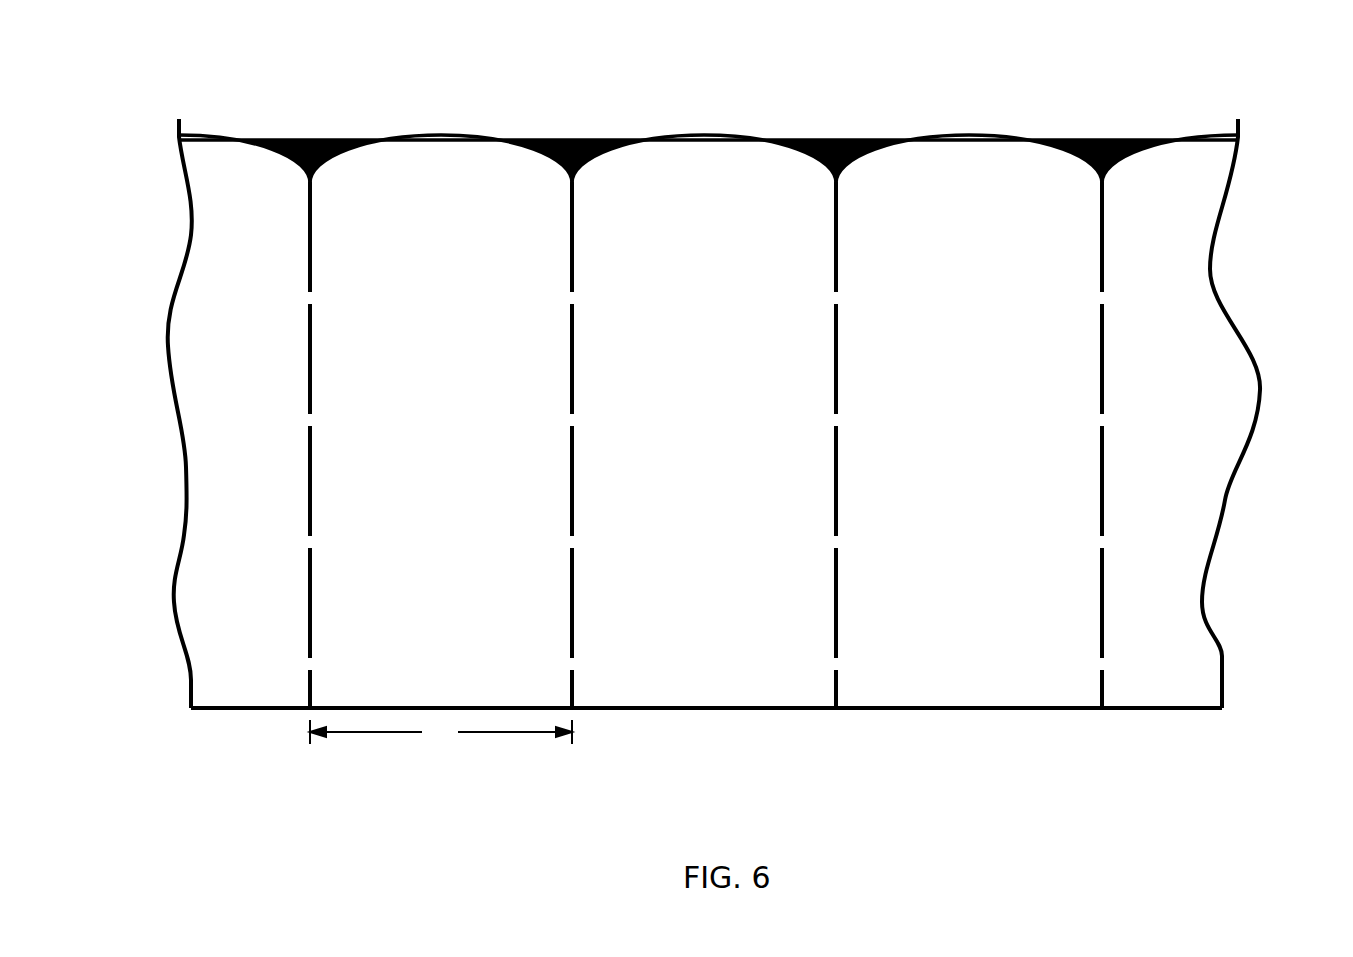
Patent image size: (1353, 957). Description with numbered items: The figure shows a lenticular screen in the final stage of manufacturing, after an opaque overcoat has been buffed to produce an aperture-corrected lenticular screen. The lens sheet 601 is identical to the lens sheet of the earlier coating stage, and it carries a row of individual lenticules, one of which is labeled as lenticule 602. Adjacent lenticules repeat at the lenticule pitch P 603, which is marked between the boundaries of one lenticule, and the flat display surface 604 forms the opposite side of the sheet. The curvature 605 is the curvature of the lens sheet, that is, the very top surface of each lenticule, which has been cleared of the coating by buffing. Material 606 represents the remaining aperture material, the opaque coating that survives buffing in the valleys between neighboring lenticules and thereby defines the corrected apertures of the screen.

The lens sheet 601 is at (1235, 516).
The lenticule 602 is at (971, 673).
The pitch P 603 is at (437, 752).
The display surface 604 is at (232, 722).
The curvature 605 is at (963, 125).
The material 606 is at (580, 135).